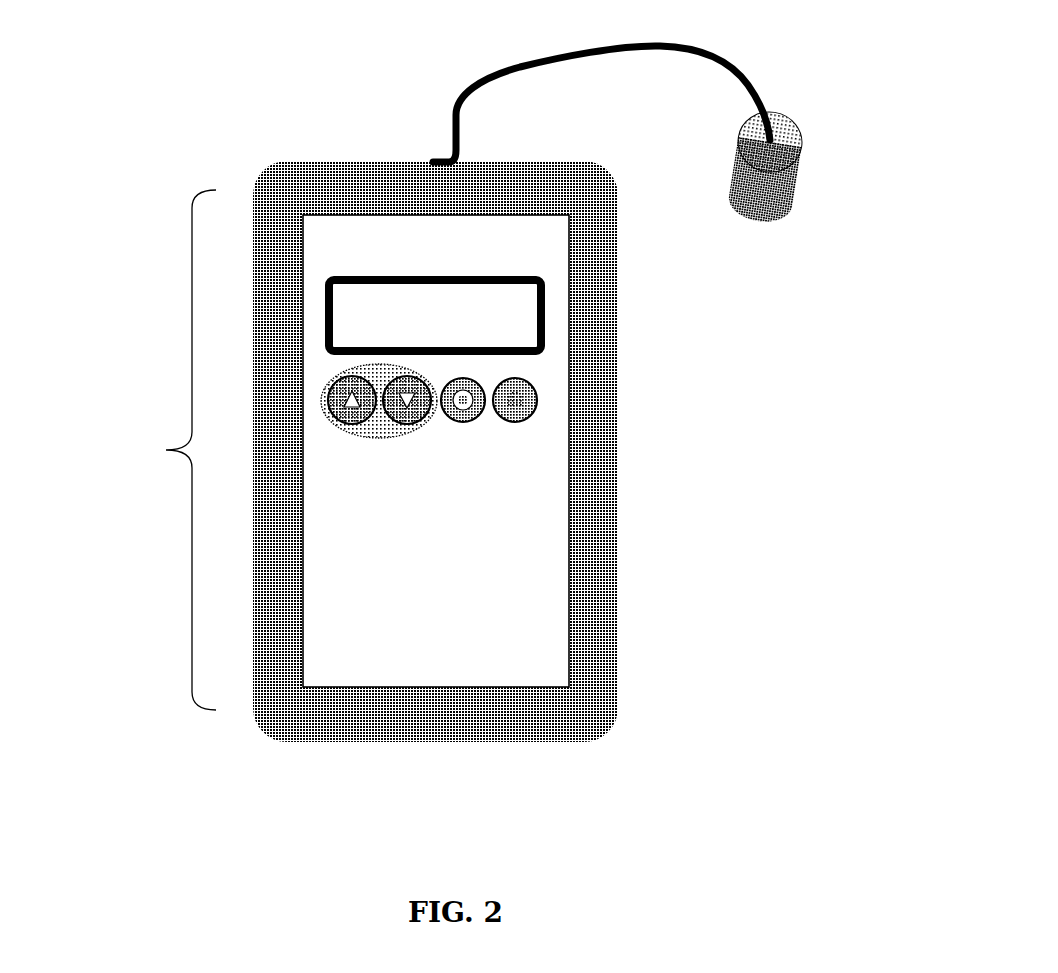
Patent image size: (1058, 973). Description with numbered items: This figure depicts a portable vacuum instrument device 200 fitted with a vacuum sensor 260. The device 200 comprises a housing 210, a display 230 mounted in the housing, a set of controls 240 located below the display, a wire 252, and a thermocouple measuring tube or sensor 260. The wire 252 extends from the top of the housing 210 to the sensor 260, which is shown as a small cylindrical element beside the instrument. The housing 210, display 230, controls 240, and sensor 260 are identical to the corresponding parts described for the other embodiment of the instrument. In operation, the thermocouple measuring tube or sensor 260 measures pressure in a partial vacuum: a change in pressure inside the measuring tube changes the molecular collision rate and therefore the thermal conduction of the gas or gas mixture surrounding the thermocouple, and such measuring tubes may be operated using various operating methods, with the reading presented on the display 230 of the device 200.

The portable vacuum instrument device 200 is at (449, 784).
The housing 210 is at (163, 450).
The display 230 is at (527, 308).
The controls 240 is at (538, 438).
The wire 252 is at (605, 50).
The vacuum sensor 260 is at (757, 222).